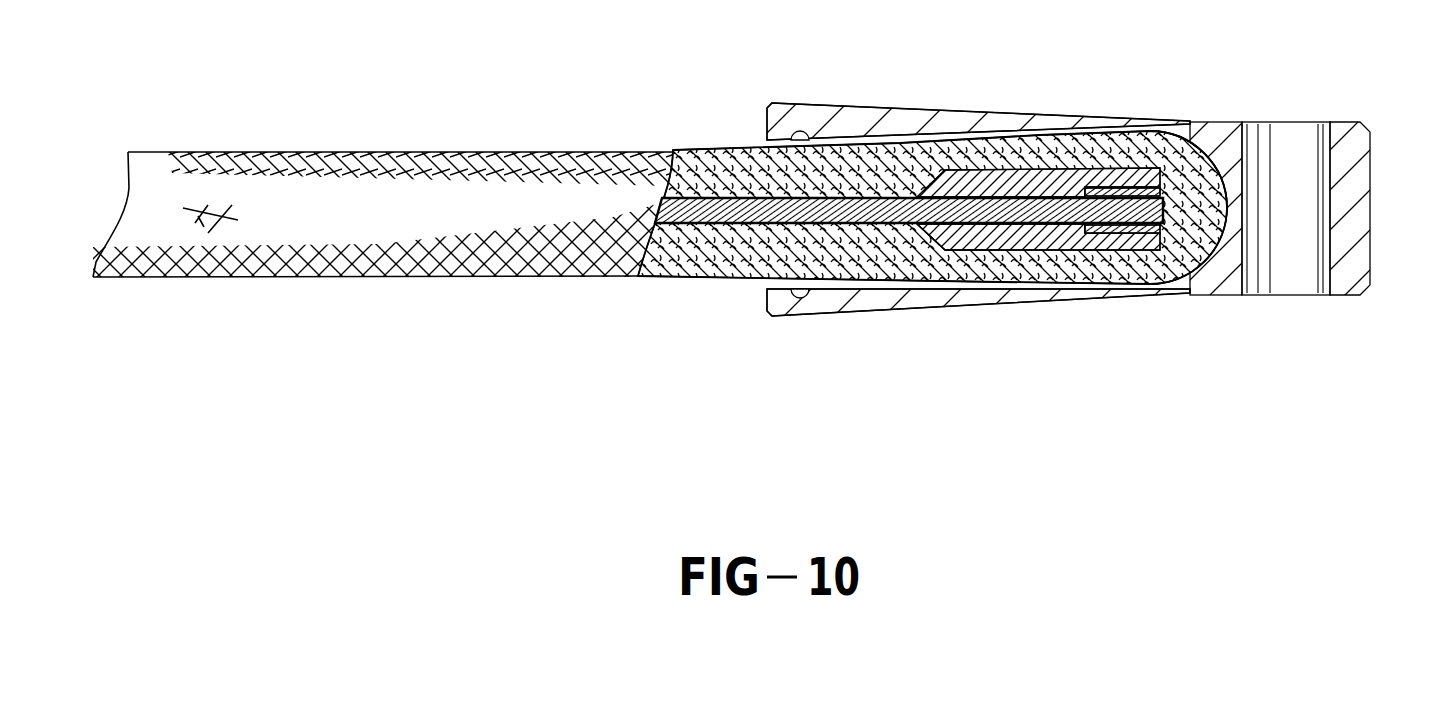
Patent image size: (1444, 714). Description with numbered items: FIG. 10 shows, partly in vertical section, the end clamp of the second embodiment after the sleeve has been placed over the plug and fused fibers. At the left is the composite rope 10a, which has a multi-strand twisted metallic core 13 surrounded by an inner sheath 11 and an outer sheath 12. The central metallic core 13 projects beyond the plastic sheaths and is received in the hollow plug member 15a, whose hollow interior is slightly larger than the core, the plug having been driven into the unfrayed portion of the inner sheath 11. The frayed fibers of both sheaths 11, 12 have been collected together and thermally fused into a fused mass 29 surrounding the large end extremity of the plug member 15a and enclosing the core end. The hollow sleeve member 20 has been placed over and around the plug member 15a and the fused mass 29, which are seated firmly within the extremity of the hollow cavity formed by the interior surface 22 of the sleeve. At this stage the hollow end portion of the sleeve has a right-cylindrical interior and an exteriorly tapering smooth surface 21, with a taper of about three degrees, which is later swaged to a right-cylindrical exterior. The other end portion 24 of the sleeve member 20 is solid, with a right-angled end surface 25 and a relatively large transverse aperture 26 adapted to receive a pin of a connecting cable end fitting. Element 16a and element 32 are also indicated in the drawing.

The composite rope 10a is at (414, 118).
The inner sheath 11 is at (692, 148).
The outer sheath 12 is at (487, 278).
The metallic core 13 is at (738, 223).
The hollow plug member 15a is at (1003, 237).
The strength member layer 16a is at (938, 248).
The hollow sleeve member 20 is at (1034, 102).
The exteriorly tapering smooth surface 21 is at (873, 104).
The interior surface 22 is at (806, 130).
The solid end portion 24 is at (1217, 297).
The right-angled end surface 25 is at (1372, 195).
The transverse aperture 26 is at (1285, 147).
The fused mass 29 is at (1178, 158).
The crimp strips 32 is at (1123, 230).